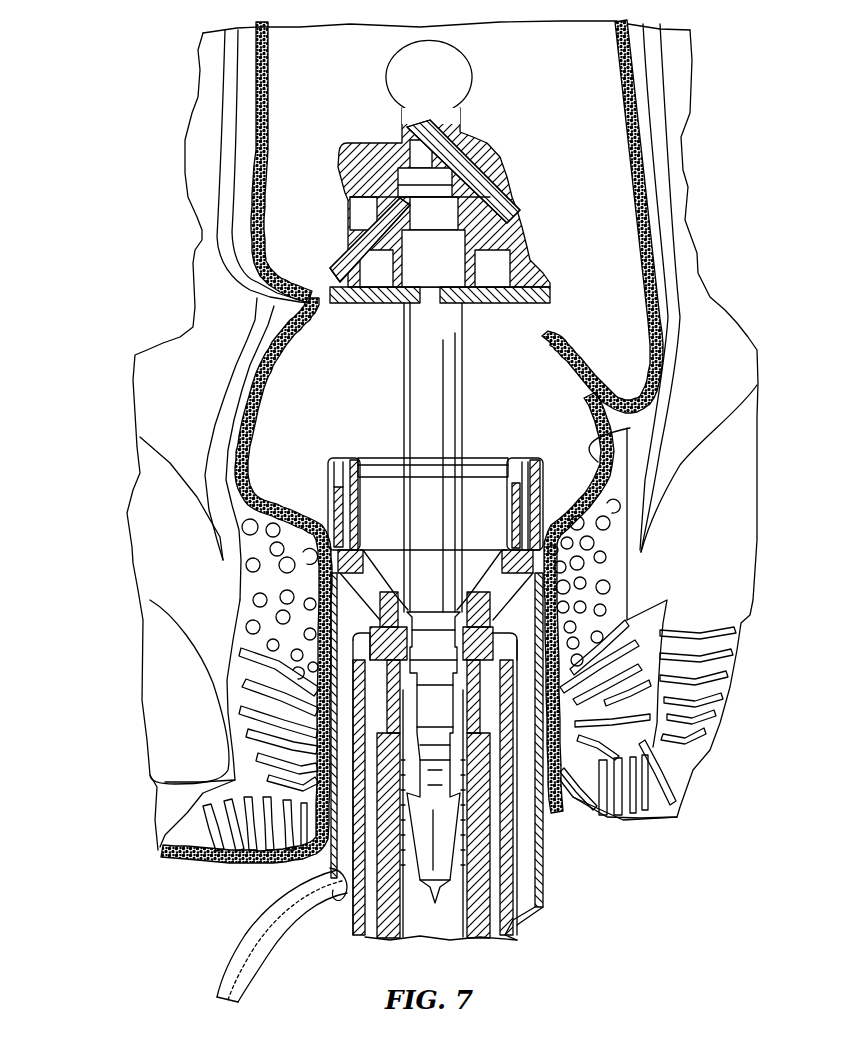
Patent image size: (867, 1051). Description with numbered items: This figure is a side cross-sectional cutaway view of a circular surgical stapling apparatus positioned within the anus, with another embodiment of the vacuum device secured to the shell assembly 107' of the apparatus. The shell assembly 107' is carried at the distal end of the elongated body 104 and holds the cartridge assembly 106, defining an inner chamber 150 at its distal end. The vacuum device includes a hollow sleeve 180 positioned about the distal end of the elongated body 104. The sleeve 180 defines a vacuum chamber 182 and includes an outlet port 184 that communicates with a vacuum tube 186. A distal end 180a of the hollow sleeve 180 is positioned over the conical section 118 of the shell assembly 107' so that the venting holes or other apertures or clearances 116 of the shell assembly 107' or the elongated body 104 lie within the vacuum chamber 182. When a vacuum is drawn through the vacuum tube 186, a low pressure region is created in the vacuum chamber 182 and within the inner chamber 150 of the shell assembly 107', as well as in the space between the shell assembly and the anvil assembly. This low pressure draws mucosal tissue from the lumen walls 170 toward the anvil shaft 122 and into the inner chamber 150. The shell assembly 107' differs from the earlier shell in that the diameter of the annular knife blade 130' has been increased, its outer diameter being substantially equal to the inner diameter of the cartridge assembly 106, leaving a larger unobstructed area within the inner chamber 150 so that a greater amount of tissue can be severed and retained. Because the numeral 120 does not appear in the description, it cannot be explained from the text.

The elongated body 104 is at (500, 945).
The cartridge assembly 106 is at (352, 458).
The shell assembly 107' is at (199, 504).
The venting holes 116 is at (380, 605).
The conical section 118 is at (327, 623).
The sleeve chamfered end 120 is at (505, 925).
The anvil shaft 122 is at (463, 417).
The annular knife blade 130' is at (673, 504).
The inner chamber 150 is at (480, 522).
The lumen walls 170 is at (253, 419).
The hollow sleeve 180 is at (540, 878).
The distal end of hollow sleeve 180a is at (340, 578).
The vacuum chamber 182 is at (355, 822).
The outlet port 184 is at (347, 908).
The vacuum tube 186 is at (243, 940).